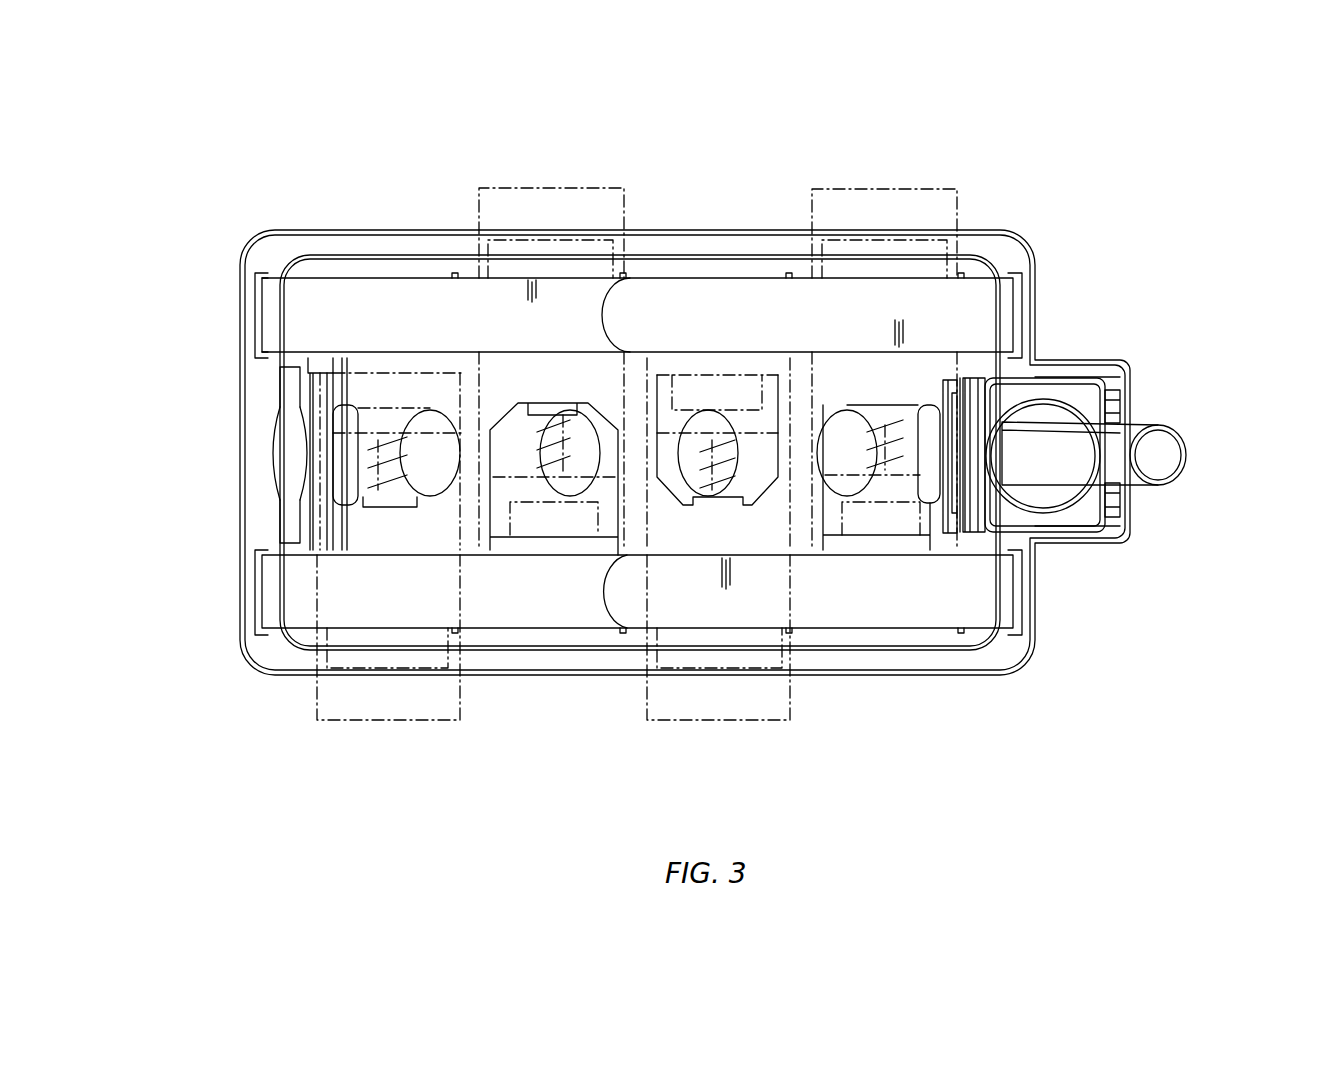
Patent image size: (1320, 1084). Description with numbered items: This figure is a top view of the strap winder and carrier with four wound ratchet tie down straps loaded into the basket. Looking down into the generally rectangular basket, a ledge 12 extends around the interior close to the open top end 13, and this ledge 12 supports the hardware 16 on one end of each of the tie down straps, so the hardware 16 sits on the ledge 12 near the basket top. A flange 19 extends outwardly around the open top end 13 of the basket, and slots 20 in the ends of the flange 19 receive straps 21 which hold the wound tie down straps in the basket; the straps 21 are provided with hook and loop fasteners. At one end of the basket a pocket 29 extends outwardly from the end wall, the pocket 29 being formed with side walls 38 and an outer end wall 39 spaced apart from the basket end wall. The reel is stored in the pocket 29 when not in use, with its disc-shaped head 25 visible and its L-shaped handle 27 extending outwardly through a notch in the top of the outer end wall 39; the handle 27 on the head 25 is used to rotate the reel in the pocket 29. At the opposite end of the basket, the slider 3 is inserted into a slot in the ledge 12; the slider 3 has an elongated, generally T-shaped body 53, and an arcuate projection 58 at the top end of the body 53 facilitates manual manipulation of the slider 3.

The slider 3 is at (212, 440).
The ledge 12 is at (873, 635).
The open top end 13 is at (723, 256).
The hardware 16 is at (570, 188).
The flange 19 is at (356, 246).
The slots 20 is at (255, 297).
The straps 21 is at (824, 332).
The head 25 is at (1107, 363).
The handle 27 is at (1187, 447).
The pocket 29 is at (1072, 400).
The side walls 38 is at (1080, 360).
The outer end wall 39 is at (1130, 397).
The body 53 is at (292, 400).
The arcuate projection 58 is at (288, 473).